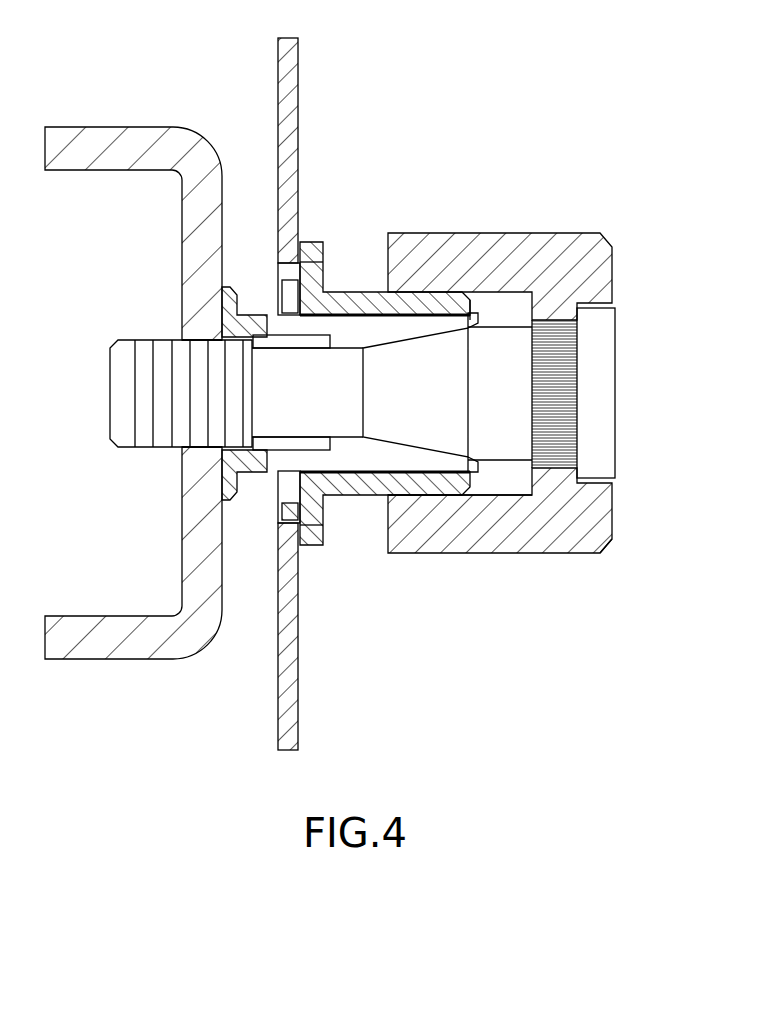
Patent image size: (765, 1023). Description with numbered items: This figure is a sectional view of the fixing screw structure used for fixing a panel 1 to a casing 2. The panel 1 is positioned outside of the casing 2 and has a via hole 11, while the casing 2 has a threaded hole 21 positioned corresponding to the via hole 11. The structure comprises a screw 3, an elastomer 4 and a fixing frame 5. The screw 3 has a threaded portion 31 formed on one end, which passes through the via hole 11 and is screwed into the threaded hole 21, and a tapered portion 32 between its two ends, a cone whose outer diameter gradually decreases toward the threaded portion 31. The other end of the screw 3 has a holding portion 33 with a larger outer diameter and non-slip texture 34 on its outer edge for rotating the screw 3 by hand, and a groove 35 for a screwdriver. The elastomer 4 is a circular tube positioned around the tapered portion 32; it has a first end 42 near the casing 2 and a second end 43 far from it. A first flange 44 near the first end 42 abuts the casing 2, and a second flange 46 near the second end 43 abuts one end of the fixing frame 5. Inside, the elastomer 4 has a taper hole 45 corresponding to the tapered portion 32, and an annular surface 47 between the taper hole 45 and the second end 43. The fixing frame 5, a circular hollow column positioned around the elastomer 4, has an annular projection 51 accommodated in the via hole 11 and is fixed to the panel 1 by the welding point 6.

The panel 1 is at (310, 78).
The casing 2 is at (113, 118).
The screw 3 is at (512, 222).
The elastomer 4 is at (355, 298).
The fixing frame 5 is at (357, 508).
The welding point 6 is at (309, 230).
The via hole 11 is at (293, 262).
The threaded hole 21 is at (200, 338).
The threaded portion 31 is at (128, 386).
The tapered portion 32 is at (417, 358).
The holding portion 33 is at (512, 520).
The non-slip texture 34 is at (560, 553).
The groove 35 is at (600, 335).
The first end 42 is at (225, 297).
The second end 43 is at (497, 317).
The first flange 44 is at (237, 290).
The taper hole 45 is at (417, 448).
The second flange 46 is at (480, 312).
The annular surface 47 is at (473, 328).
The annular projection 51 is at (290, 512).